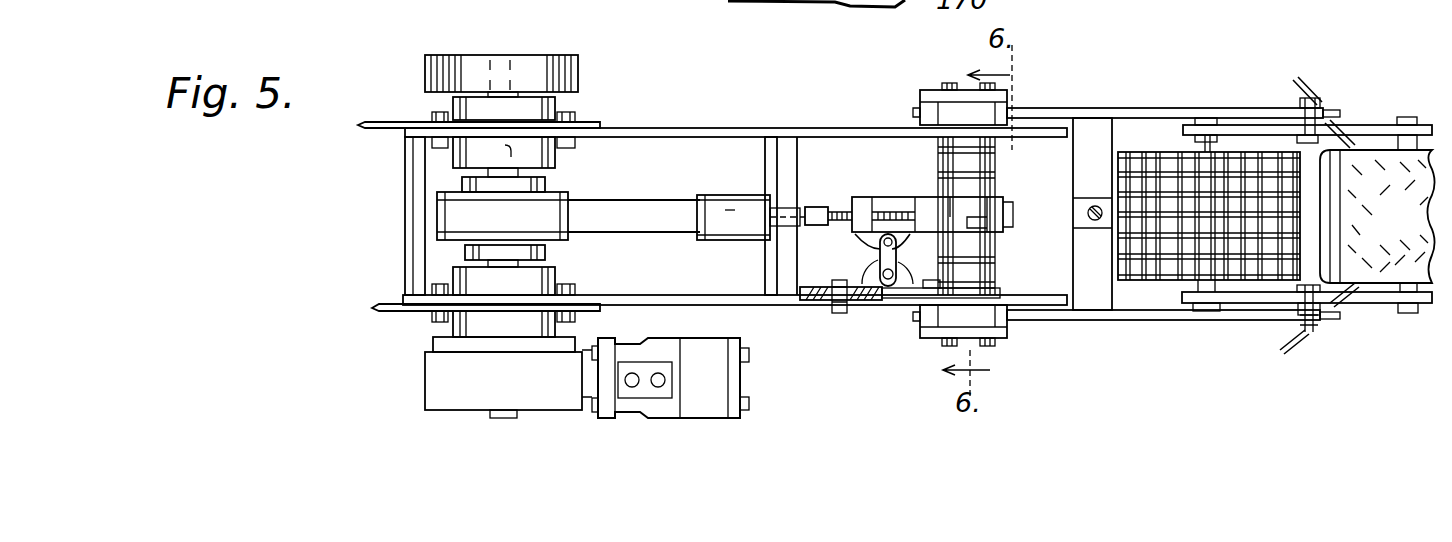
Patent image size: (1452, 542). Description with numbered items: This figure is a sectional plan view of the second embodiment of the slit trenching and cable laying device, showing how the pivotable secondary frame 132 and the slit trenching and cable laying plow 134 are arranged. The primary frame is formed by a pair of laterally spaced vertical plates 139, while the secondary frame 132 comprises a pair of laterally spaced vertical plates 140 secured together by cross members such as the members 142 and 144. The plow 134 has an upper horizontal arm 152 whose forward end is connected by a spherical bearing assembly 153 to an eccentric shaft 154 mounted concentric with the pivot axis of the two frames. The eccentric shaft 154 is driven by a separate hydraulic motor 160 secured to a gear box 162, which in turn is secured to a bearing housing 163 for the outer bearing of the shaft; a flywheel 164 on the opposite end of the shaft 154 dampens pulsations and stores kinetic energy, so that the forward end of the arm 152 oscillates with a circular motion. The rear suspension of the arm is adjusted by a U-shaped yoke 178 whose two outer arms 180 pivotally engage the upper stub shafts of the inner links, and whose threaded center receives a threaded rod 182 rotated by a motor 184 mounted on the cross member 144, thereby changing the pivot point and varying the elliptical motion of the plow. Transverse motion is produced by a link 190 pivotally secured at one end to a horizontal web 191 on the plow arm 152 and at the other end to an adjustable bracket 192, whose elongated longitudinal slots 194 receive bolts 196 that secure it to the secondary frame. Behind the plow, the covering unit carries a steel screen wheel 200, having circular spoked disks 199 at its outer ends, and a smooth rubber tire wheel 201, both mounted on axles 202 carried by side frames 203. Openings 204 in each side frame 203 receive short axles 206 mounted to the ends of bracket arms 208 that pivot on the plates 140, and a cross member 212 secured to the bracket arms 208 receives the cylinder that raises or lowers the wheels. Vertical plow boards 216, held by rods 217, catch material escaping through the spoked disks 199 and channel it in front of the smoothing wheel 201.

The secondary frame 132 is at (792, 112).
The slit trenching and cable laying plow 134 is at (622, 188).
The vertical plates 139 is at (383, 121).
The vertical plates 140 is at (748, 128).
The cross member 142 is at (410, 172).
The cross member 144 is at (793, 132).
The upper horizontal arm 152 is at (652, 206).
The spherical bearing assembly 153 is at (462, 250).
The eccentric shaft 154 is at (522, 263).
The hydraulic motor 160 is at (718, 384).
The gear box 162 is at (428, 388).
The bearing housing 163 is at (548, 110).
The flywheel 164 is at (490, 72).
The U-shaped yoke 178 is at (860, 205).
The outer arms 180 is at (908, 210).
The threaded rod 182 is at (836, 206).
The motor 184 is at (727, 222).
The link 190 is at (878, 300).
The horizontal web 191 is at (862, 246).
The adjustable bracket 192 is at (886, 300).
The elongated longitudinal slots 194 is at (830, 308).
The bolts 196 is at (800, 280).
The circular spoked disks 199 is at (1138, 150).
The wheel 200 is at (1162, 170).
The wheel 201 is at (1410, 226).
The axles 202 is at (1222, 132).
The side frames 203 is at (1365, 125).
The openings 204 is at (1238, 320).
The short axles 206 is at (1320, 105).
The bracket arms 208 is at (1032, 118).
The cross member 212 is at (1085, 168).
The vertical plow boards 216 is at (1296, 78).
The rods 217 is at (1338, 100).